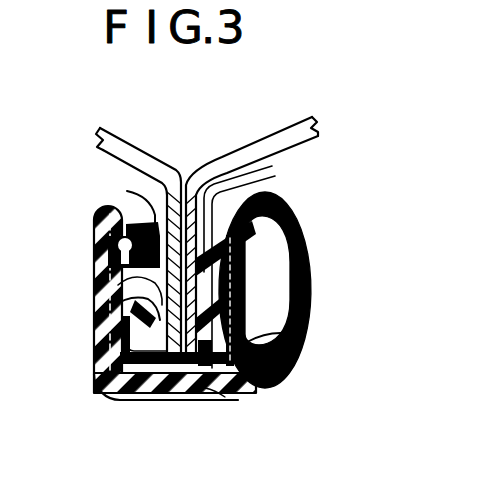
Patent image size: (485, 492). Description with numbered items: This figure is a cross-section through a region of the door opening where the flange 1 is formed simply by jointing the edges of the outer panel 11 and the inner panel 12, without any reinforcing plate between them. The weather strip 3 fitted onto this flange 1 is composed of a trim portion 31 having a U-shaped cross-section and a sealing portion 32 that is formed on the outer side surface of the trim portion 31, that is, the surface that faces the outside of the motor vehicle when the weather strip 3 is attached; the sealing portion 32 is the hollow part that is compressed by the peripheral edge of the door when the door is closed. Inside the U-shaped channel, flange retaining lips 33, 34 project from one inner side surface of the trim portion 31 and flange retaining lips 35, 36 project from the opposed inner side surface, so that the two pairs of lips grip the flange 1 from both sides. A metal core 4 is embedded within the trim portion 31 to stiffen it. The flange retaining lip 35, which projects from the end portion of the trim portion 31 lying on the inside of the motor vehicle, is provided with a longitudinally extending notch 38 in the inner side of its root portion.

The flange 1 is at (183, 402).
The weather strip 3 is at (93, 373).
The metal core 4 is at (225, 397).
The outer panel 11 is at (230, 160).
The inner panel 12 is at (148, 163).
The trim portion 31 is at (146, 401).
The sealing portion 32 is at (304, 312).
The flange retaining lip 33 is at (249, 263).
The flange retaining lip 34 is at (303, 337).
The flange retaining lip 35 is at (127, 203).
The flange retaining lip 36 is at (112, 307).
The notch 38 is at (100, 268).